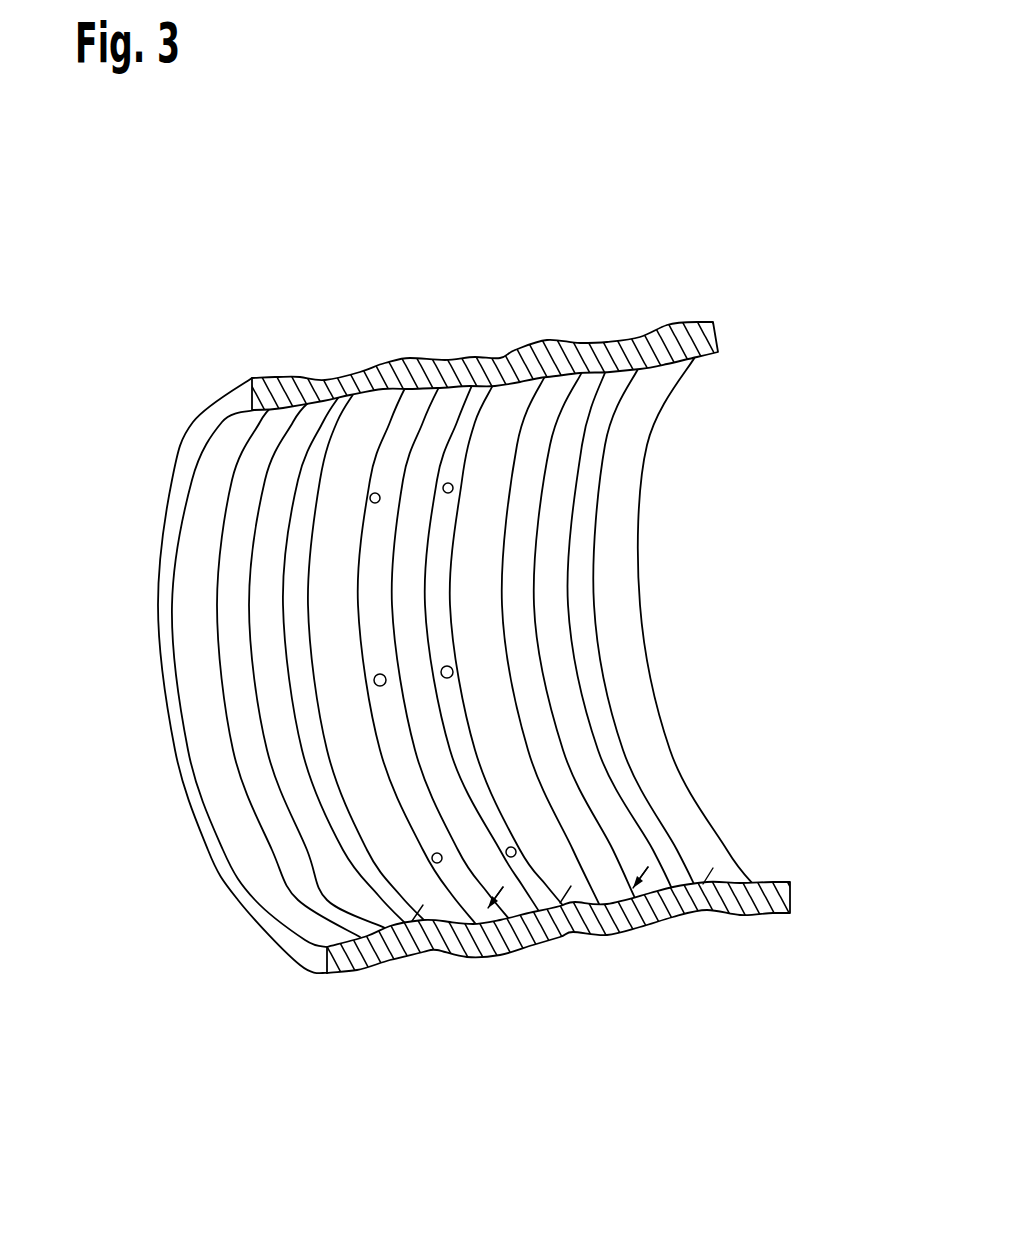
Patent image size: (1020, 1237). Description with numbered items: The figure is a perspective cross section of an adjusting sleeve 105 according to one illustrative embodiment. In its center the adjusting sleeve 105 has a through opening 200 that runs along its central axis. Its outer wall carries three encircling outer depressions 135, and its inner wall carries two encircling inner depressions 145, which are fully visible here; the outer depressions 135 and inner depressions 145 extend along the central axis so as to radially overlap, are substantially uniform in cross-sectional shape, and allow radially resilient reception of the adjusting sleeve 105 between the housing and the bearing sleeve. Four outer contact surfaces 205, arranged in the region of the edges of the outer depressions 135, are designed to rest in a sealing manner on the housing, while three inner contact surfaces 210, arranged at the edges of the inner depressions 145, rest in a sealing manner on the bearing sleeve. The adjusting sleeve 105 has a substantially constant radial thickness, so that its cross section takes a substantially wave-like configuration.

The adjusting sleeve 105 is at (212, 185).
The through opening 200 is at (242, 813).
The outer contact surfaces 205 is at (270, 378).
The outer depressions 135 is at (346, 373).
The inner contact surfaces 210 is at (423, 905).
The inner depressions 145 is at (503, 887).